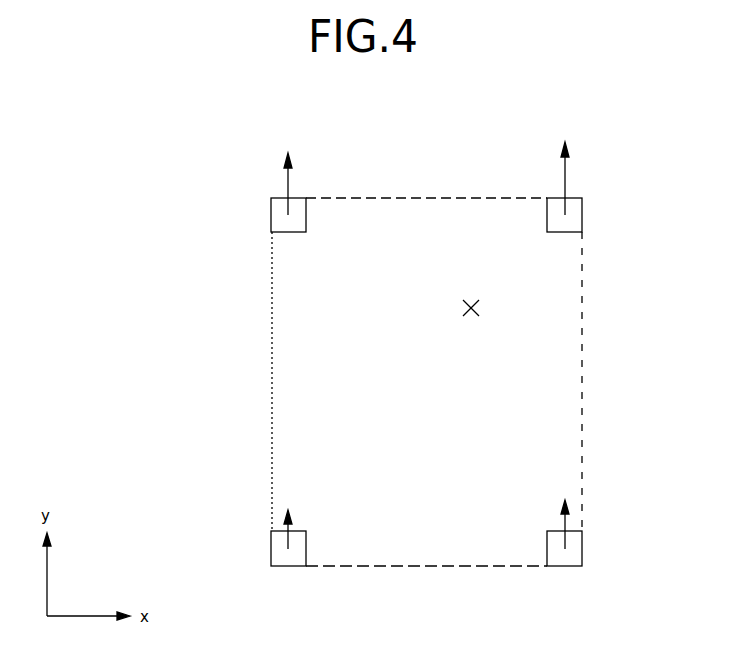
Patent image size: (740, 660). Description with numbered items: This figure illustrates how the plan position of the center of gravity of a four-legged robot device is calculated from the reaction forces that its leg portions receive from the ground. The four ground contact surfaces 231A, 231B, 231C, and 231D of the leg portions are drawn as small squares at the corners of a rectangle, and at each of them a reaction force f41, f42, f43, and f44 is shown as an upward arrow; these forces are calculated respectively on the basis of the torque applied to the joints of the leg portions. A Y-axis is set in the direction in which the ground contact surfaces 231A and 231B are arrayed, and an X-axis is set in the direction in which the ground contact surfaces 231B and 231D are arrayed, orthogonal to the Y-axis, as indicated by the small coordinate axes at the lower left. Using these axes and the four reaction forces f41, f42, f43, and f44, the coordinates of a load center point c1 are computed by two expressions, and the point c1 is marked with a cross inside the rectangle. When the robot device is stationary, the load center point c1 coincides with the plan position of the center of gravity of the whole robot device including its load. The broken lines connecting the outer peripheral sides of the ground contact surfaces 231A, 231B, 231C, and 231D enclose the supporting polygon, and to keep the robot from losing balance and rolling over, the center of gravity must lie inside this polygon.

The ground contact surface 231A is at (271, 216).
The ground contact surface 231B is at (271, 550).
The ground contact surface 231C is at (582, 216).
The ground contact surface 231D is at (582, 550).
The reaction force f41 is at (303, 184).
The reaction force f42 is at (303, 527).
The reaction force f43 is at (580, 178).
The reaction force f44 is at (585, 524).
The load center point c1 is at (479, 307).